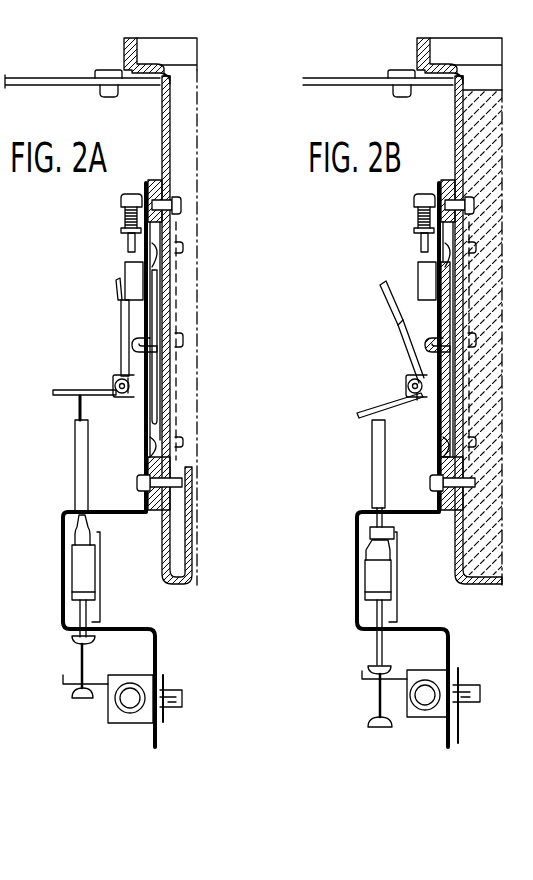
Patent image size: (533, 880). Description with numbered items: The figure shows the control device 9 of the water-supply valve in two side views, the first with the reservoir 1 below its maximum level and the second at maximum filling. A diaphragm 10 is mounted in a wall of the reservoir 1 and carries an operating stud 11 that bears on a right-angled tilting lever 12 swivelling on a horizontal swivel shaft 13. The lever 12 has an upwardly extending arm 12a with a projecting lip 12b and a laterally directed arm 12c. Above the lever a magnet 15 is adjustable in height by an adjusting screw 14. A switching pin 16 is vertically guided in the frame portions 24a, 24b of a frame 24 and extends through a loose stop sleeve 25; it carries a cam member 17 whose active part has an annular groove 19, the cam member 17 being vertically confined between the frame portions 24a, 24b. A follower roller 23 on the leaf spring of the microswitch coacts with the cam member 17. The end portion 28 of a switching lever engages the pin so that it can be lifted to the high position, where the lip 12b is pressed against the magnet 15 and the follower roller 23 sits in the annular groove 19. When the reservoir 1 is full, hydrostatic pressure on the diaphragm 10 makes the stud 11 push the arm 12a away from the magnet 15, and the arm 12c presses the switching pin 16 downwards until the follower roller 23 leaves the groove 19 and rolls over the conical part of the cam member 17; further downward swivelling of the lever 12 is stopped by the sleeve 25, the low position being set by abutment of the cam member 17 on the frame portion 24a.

In FIG. 2A, the reservoir 1 is at (175, 127).
In FIG. 2B, the reservoir 1 is at (456, 125).
In FIG. 2A, the control device 9 is at (88, 308).
In FIG. 2B, the control device 9 is at (365, 258).
In FIG. 2A, the diaphragm 10 is at (163, 287).
In FIG. 2B, the diaphragm 10 is at (447, 313).
In FIG. 2A, the operating stud 11 is at (147, 348).
In FIG. 2B, the operating stud 11 is at (448, 353).
In FIG. 2A, the right-angled tilting lever 12 is at (115, 370).
In FIG. 2B, the right-angled tilting lever 12 is at (386, 380).
In FIG. 2A, the upwardly extending arm 12a is at (125, 335).
In FIG. 2B, the upwardly extending arm 12a is at (402, 332).
In FIG. 2A, the projecting lip 12b is at (118, 285).
In FIG. 2B, the projecting lip 12b is at (381, 293).
In FIG. 2A, the laterally directed arm 12c is at (65, 392).
In FIG. 2B, the laterally directed arm 12c is at (410, 398).
In FIG. 2A, the horizontal swivel shaft 13 is at (128, 393).
In FIG. 2B, the horizontal swivel shaft 13 is at (417, 393).
In FIG. 2A, the adjusting screw 14 is at (132, 193).
In FIG. 2B, the adjusting screw 14 is at (423, 193).
In FIG. 2A, the magnet 15 is at (132, 272).
In FIG. 2B, the magnet 15 is at (423, 272).
In FIG. 2A, the switching pin 16 is at (76, 412).
In FIG. 2B, the switching pin 16 is at (382, 640).
In FIG. 2A, the cam member 17 is at (75, 563).
In FIG. 2B, the cam member 17 is at (380, 590).
In FIG. 2B, the annular groove 19 is at (383, 560).
In FIG. 2B, the follower roller 23 is at (392, 537).
In FIG. 2B, the frame 24 is at (442, 438).
In FIG. 2A, the frame portion 24a is at (109, 627).
In FIG. 2A, the frame portion 24b is at (106, 510).
In FIG. 2A, the loose stop sleeve 25 is at (75, 465).
In FIG. 2A, the end portion of switching lever 28 is at (67, 678).
In FIG. 2B, the end portion of switching lever 28 is at (367, 680).